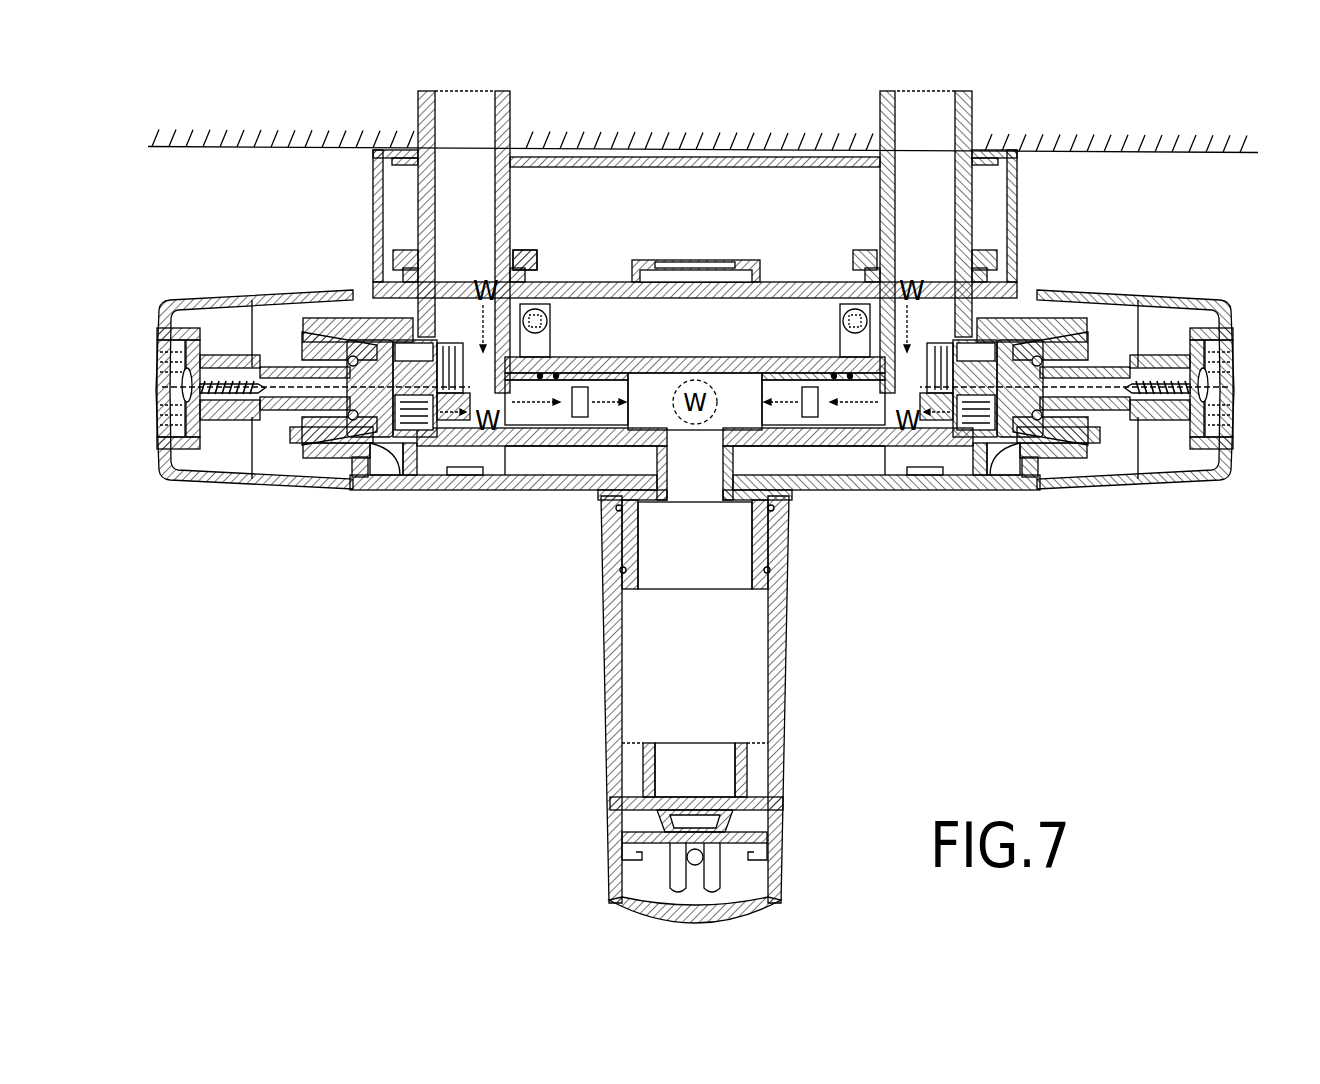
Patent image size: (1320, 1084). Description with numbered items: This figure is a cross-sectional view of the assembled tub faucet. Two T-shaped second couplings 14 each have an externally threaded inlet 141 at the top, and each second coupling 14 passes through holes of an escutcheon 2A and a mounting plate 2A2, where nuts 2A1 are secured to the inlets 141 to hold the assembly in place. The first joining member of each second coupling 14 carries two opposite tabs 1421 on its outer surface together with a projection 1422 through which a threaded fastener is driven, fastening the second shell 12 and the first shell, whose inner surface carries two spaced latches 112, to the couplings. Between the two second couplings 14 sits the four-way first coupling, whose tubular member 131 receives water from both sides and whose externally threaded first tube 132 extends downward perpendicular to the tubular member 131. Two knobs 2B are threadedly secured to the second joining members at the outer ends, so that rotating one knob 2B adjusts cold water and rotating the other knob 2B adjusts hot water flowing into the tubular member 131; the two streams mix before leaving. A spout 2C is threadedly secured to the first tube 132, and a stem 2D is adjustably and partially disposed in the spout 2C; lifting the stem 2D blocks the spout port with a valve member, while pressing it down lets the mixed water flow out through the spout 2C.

The inlet 141 is at (420, 106).
The escutcheon 2A is at (1023, 203).
The nuts 2A1 is at (540, 262).
The mounting plate 2A2 is at (773, 177).
The tubular member 131 is at (777, 357).
The projection 1422 is at (553, 340).
The knobs 2B is at (205, 290).
The second coupling 14 is at (388, 452).
The latches 112 is at (477, 478).
The tabs 1421 is at (558, 447).
The second shell 12 is at (963, 493).
The first tube 132 is at (688, 590).
The spout 2C is at (589, 708).
The stem 2D is at (690, 858).